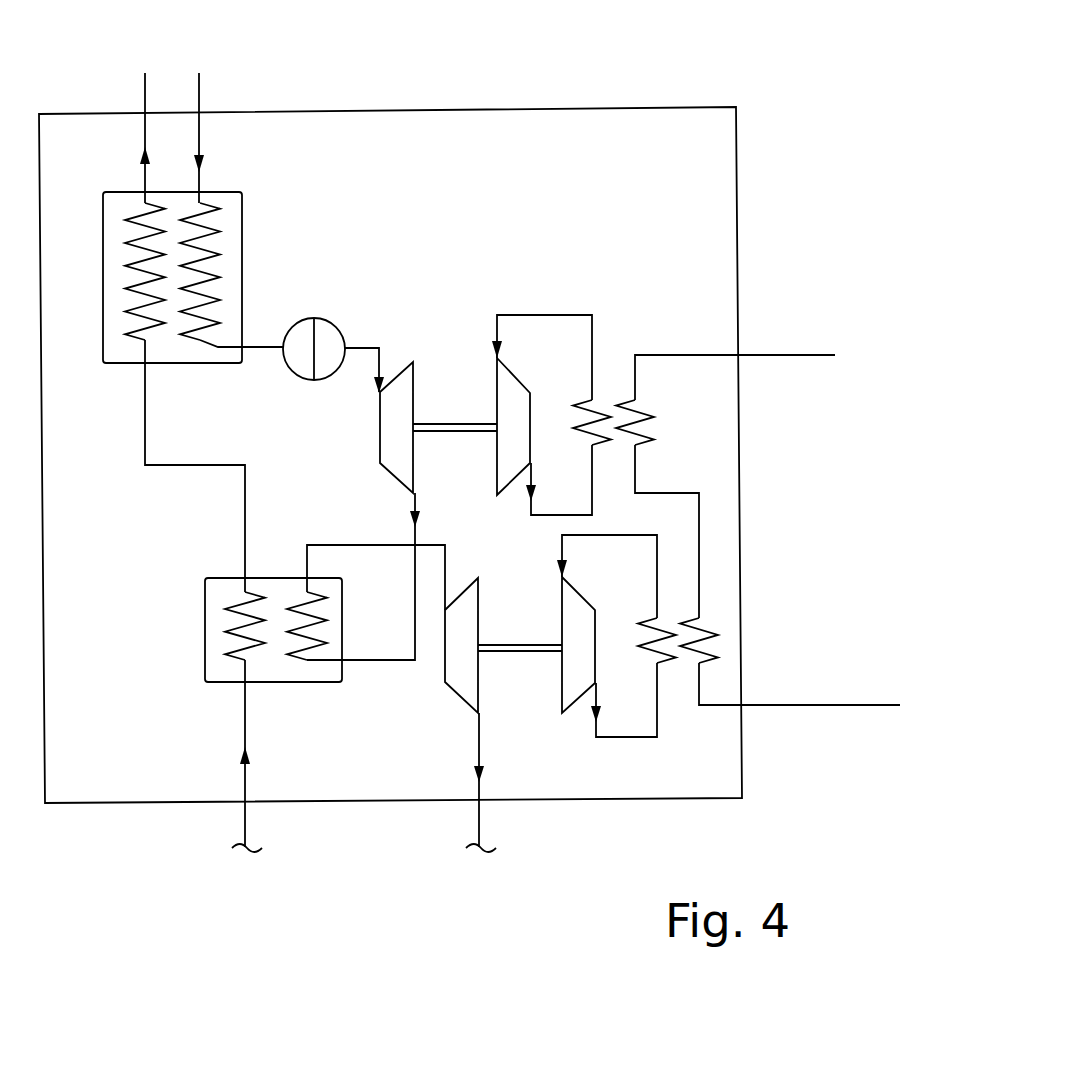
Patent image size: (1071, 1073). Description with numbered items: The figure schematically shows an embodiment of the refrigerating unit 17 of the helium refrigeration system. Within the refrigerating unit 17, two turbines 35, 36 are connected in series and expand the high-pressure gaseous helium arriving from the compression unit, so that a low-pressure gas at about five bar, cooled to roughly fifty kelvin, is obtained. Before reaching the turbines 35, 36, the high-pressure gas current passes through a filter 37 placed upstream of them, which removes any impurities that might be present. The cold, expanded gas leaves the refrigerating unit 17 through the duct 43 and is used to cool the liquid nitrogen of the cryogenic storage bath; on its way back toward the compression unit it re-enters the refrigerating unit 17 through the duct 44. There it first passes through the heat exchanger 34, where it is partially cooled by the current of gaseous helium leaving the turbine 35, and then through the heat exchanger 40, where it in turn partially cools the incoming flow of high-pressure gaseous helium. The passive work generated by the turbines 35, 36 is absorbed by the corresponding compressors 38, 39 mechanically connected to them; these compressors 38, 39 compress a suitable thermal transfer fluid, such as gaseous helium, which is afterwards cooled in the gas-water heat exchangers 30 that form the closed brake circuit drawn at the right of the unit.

The refrigerating unit 17 is at (730, 92).
The gas-water heat exchangers 30 is at (710, 510).
The heat exchanger 34 is at (288, 685).
The turbine 35 is at (421, 418).
The turbine 36 is at (488, 666).
The filter 37 is at (340, 344).
The compressor 38 is at (602, 418).
The compressor 39 is at (669, 691).
The heat exchanger 40 is at (270, 241).
The duct 43 is at (481, 818).
The duct 44 is at (243, 816).